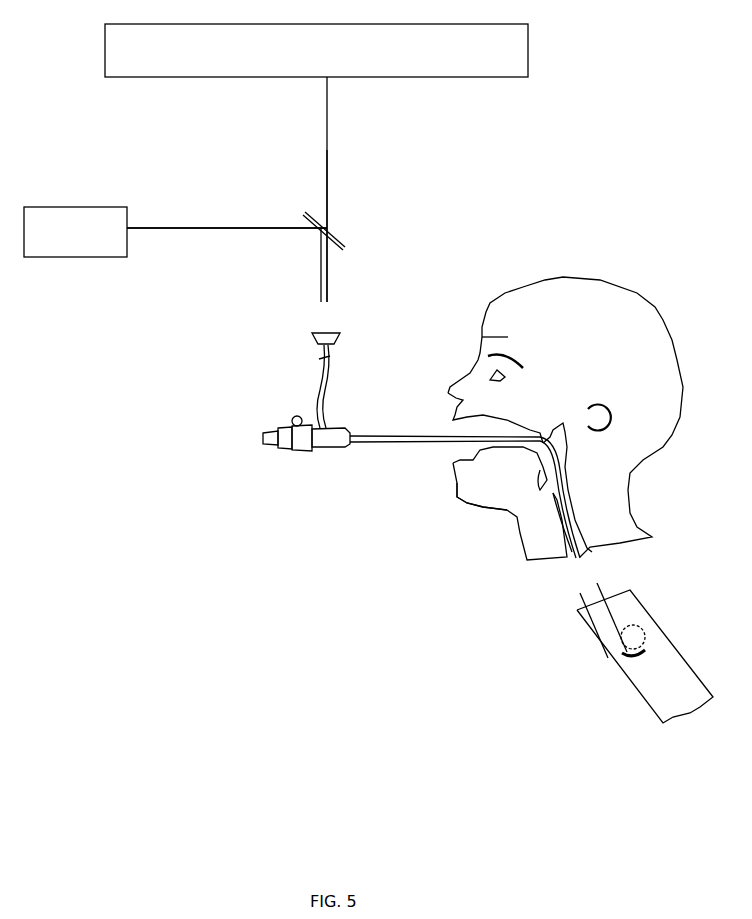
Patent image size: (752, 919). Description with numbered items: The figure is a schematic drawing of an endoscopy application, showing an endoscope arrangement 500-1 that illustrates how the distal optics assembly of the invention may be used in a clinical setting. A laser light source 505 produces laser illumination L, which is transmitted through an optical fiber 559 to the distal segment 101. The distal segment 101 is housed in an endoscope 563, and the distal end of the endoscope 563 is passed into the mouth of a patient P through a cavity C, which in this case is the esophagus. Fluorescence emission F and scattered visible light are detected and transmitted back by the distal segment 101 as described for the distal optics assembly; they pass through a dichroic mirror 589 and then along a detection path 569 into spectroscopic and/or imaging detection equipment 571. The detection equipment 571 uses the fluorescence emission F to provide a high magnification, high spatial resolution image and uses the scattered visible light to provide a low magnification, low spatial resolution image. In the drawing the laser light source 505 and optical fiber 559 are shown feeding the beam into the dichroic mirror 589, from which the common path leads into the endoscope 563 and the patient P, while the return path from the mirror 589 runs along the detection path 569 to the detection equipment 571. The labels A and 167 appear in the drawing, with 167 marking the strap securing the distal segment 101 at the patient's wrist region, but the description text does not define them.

The spectroscopic and/or imaging detection equipment 571 is at (528, 53).
The fluorescence emission F is at (328, 116).
The detection path 569 is at (329, 166).
The dichroic mirror 589 is at (357, 232).
The laser light source 505 is at (40, 249).
The optical fiber 559 is at (166, 232).
The laser illumination L is at (219, 232).
The endoscope 563 is at (378, 455).
The patient P is at (671, 383).
The airway A is at (497, 376).
The cavity C is at (537, 470).
The distal segment 101 is at (603, 643).
The strap 167 is at (607, 662).
The endoscope arrangement 500-1 is at (112, 627).